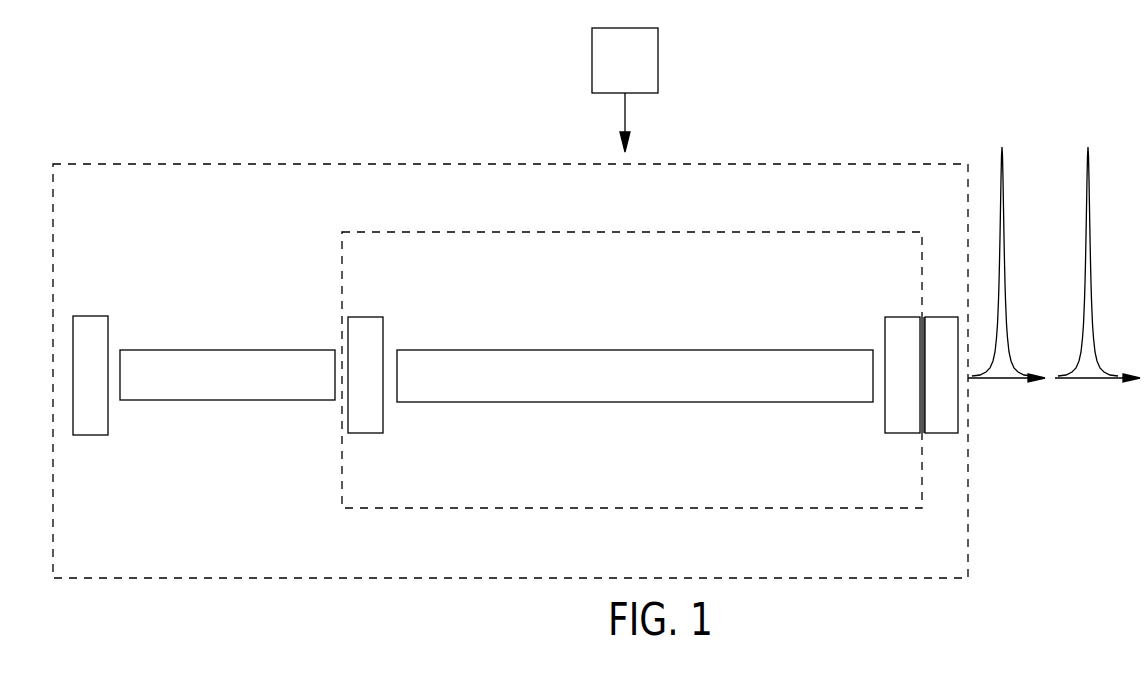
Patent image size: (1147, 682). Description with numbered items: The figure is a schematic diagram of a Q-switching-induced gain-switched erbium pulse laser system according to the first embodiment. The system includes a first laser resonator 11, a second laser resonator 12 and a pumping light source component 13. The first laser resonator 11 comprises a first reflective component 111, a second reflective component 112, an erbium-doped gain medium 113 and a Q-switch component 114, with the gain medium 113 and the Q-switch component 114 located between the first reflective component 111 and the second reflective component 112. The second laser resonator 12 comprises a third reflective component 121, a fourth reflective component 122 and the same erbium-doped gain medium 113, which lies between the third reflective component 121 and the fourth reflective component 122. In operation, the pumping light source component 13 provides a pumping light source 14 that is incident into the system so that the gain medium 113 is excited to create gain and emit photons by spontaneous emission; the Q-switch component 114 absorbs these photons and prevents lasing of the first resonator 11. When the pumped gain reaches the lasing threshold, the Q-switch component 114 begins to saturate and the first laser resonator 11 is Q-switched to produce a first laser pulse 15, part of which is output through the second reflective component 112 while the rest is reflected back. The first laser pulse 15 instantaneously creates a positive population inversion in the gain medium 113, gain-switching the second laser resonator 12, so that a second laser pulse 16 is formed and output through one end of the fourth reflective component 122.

The first laser resonator 11 is at (826, 164).
The second laser resonator 12 is at (788, 508).
The pumping light source component 13 is at (592, 57).
The pumping light source 14 is at (625, 113).
The first laser pulse 15 is at (1088, 147).
The second laser pulse 16 is at (1002, 147).
The first reflective component 111 is at (88, 435).
The second reflective component 112 is at (942, 433).
The Er3+-doped gain medium 113 is at (757, 402).
The Q-switch component 114 is at (213, 400).
The third reflective component 121 is at (368, 317).
The fourth reflective component 122 is at (902, 317).